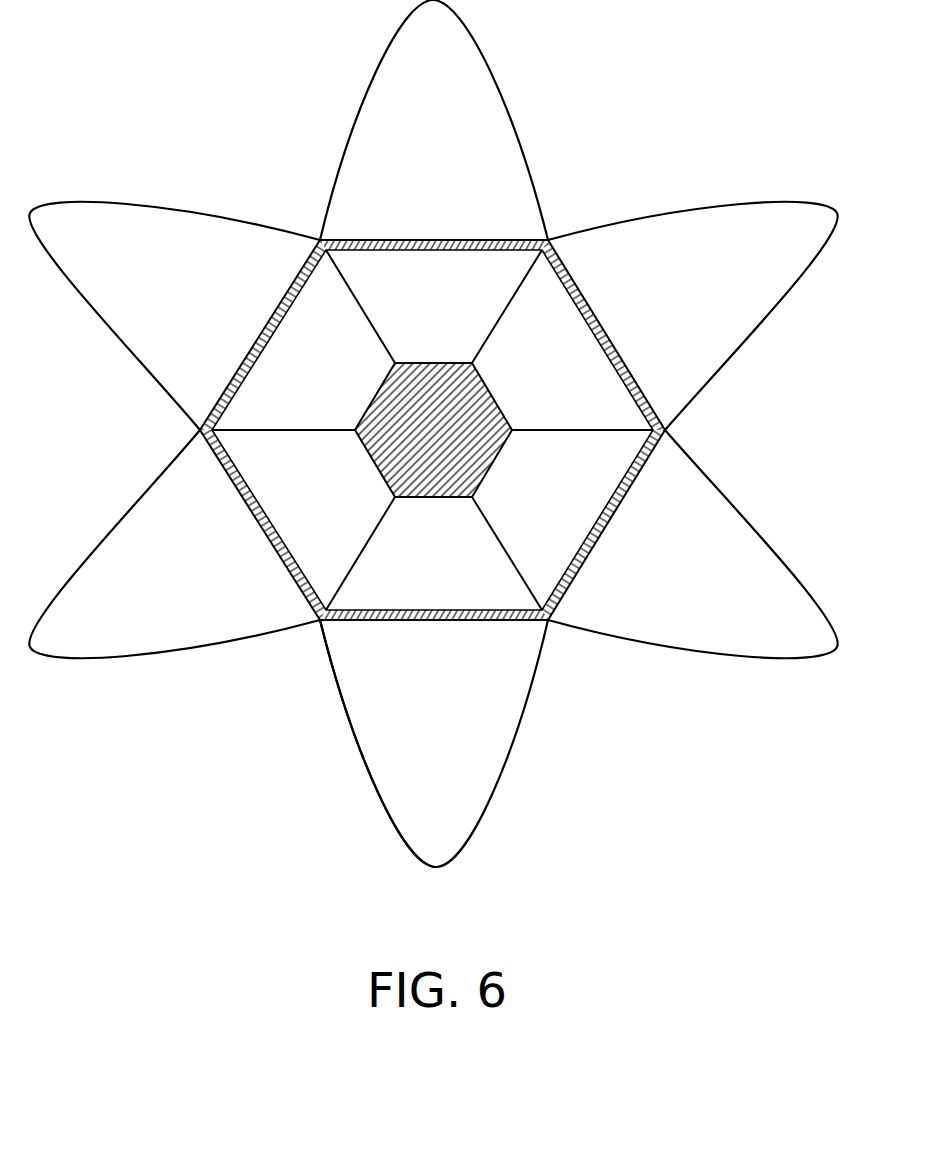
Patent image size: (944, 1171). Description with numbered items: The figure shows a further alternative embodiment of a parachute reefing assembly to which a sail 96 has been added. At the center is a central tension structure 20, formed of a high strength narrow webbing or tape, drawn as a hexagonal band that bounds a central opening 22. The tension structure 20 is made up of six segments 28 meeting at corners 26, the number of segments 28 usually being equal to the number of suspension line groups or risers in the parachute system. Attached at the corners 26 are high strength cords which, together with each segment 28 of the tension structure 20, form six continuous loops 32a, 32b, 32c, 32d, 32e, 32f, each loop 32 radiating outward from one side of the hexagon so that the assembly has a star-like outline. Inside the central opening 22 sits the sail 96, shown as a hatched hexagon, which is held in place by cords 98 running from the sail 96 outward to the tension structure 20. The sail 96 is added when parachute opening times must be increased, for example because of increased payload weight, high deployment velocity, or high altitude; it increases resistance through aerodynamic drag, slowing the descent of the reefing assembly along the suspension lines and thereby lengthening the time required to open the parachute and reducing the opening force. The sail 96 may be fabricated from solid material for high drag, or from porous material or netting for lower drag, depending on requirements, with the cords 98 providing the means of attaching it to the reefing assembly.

The central tension structure 20 is at (652, 401).
The central opening 22 is at (596, 494).
The corners 26 is at (197, 430).
The segment 28 is at (288, 283).
The continuous loop 32 is at (362, 730).
The continuous loop 32a is at (367, 108).
The continuous loop 32b is at (802, 280).
The continuous loop 32c is at (757, 520).
The continuous loop 32d is at (500, 763).
The continuous loop 32e is at (90, 665).
The continuous loop 32f is at (100, 328).
The sail 96 is at (375, 478).
The cords 98 is at (500, 320).